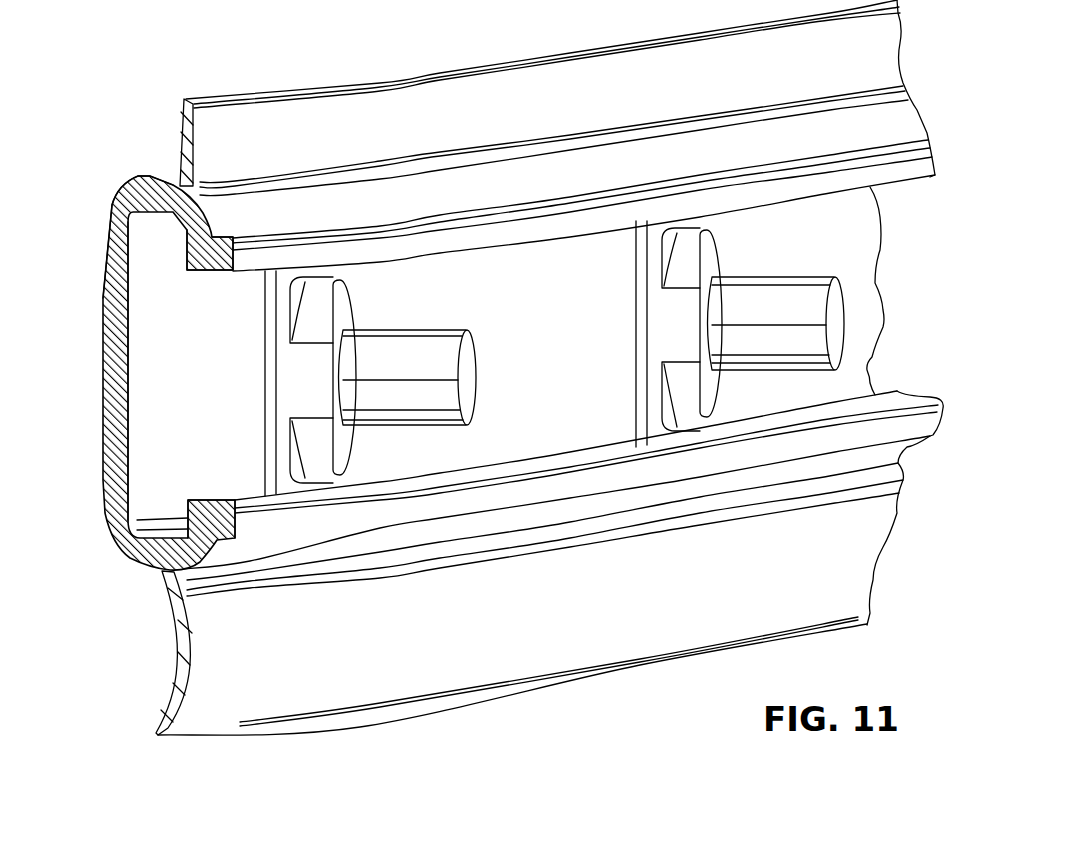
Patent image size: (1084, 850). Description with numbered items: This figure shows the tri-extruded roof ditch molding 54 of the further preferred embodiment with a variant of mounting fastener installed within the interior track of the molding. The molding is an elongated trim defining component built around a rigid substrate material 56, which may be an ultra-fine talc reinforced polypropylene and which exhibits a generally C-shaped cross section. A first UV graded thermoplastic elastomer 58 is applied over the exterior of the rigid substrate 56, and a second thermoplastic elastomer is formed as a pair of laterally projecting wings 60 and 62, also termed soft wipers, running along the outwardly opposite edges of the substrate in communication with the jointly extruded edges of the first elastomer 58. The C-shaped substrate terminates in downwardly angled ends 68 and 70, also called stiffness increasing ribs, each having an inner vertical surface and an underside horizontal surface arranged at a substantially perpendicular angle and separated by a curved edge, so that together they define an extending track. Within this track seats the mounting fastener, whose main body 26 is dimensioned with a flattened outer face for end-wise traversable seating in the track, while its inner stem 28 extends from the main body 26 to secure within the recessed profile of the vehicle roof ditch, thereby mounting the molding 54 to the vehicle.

The main body 26 is at (292, 379).
The inner stem 28 is at (432, 343).
The tri-extruded roof ditch molding 54 is at (149, 412).
The rigid substrate material 56 is at (122, 362).
The first UV graded thermoplastic elastomer 58 is at (102, 270).
The laterally projecting wing 60 is at (172, 643).
The laterally projecting wing 62 is at (183, 130).
The downwardly angled end 68 is at (216, 525).
The downwardly angled end 70 is at (206, 260).